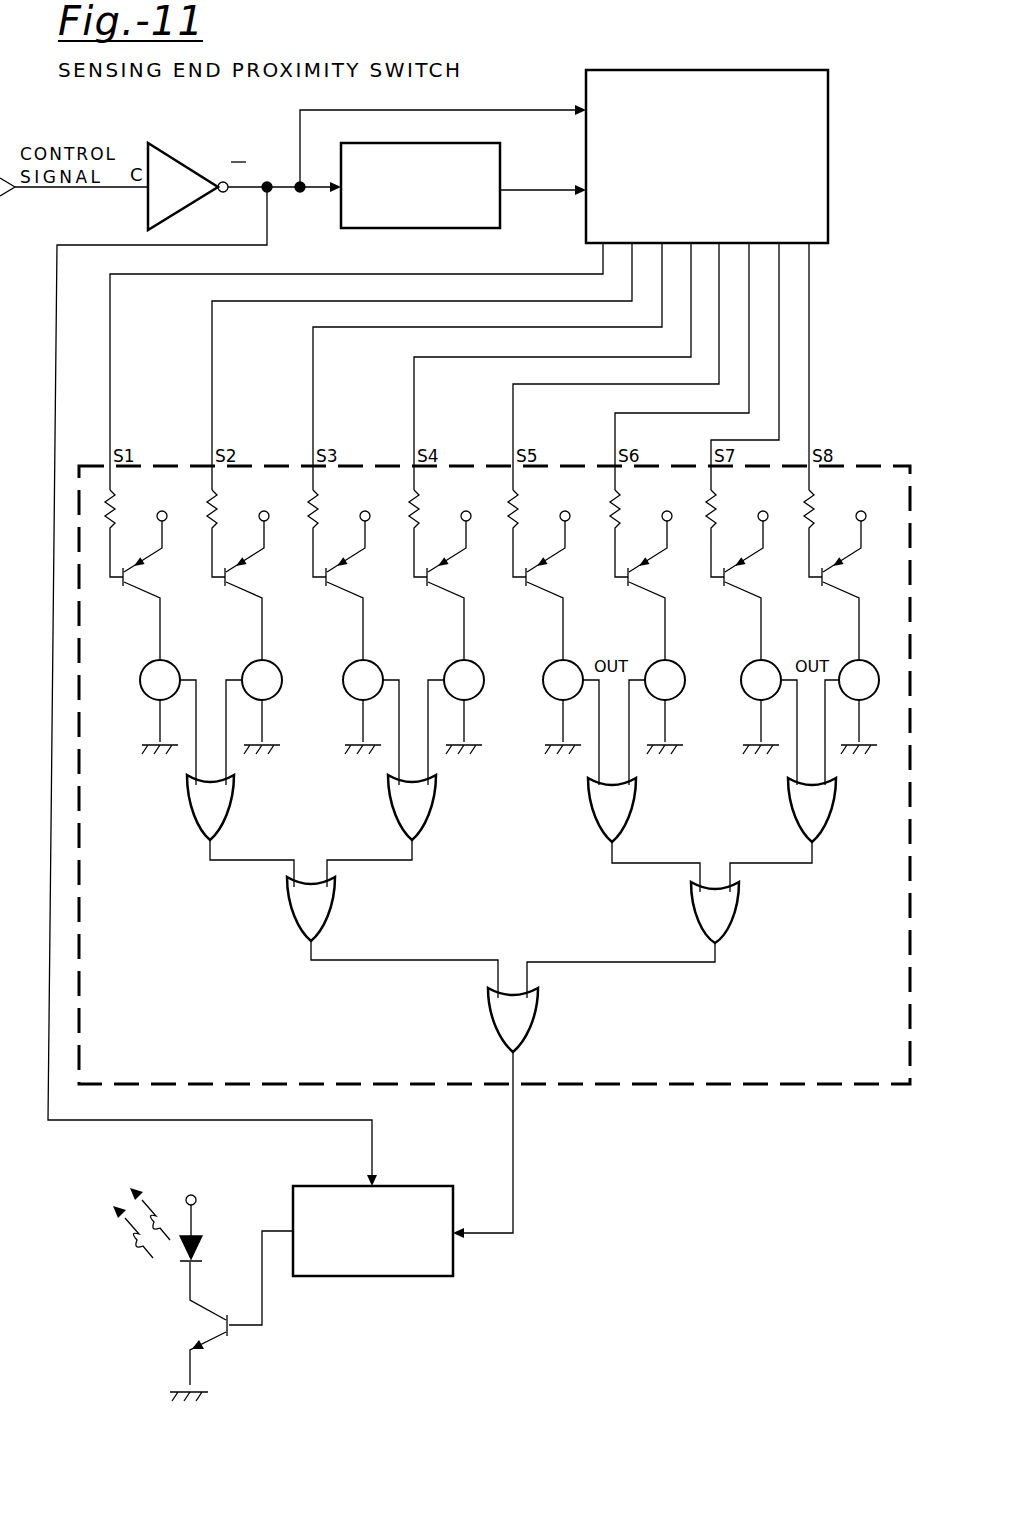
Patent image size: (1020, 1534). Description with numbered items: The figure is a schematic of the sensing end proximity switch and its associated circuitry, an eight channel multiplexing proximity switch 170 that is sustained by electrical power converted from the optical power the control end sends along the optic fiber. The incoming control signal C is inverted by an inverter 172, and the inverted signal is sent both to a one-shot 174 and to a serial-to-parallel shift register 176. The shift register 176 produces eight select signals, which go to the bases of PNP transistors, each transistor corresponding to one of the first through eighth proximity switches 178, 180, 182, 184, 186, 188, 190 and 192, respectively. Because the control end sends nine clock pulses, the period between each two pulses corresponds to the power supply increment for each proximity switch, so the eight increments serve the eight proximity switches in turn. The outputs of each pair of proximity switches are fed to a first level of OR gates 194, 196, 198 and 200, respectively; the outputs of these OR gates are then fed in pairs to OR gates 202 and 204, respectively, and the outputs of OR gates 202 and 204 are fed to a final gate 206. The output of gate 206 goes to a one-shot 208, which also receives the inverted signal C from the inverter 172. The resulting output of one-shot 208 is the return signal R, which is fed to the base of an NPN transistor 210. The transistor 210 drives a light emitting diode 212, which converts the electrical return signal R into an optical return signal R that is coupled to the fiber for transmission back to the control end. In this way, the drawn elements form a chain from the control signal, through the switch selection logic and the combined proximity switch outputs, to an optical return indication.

The proximity switch 170 is at (659, 1087).
The inverter 172 is at (167, 157).
The one-shot 174 is at (482, 143).
The serial-to-parallel shift register 176 is at (828, 193).
The first proximity switch 178 is at (158, 637).
The second proximity switch 180 is at (266, 637).
The third proximity switch 182 is at (360, 637).
The fourth proximity switch 184 is at (465, 637).
The fifth proximity switch 186 is at (560, 637).
The sixth proximity switch 188 is at (666, 637).
The seventh proximity switch 190 is at (757, 637).
The eighth proximity switch 192 is at (835, 637).
The OR gate 194 is at (234, 790).
The OR gate 196 is at (437, 790).
The OR gate 198 is at (637, 792).
The OR gate 200 is at (837, 792).
The OR gate 202 is at (330, 927).
The OR gate 204 is at (738, 930).
The gate 206 is at (538, 1008).
The one-shot 208 is at (417, 1277).
The NPN transistor 210 is at (210, 1338).
The light emitting diode 212 is at (185, 1262).